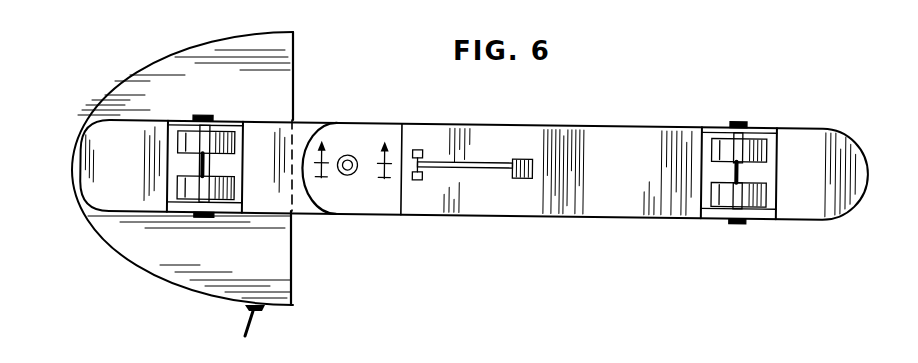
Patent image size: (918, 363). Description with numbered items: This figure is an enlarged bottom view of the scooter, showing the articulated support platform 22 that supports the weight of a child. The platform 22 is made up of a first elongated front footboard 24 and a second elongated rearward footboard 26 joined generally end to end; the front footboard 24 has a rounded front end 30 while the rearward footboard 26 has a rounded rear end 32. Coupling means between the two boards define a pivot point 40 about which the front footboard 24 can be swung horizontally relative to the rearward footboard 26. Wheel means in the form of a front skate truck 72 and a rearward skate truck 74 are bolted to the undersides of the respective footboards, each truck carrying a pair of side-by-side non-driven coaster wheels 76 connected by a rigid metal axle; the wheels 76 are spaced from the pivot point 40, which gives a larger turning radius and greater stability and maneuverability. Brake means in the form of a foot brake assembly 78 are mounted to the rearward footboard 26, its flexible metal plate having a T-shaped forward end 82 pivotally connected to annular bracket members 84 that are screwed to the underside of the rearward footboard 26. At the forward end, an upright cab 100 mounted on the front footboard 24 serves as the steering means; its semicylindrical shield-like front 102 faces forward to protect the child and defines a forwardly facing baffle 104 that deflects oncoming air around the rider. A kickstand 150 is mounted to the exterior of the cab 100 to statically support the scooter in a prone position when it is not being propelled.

The articulated support platform 22 is at (428, 214).
The front footboard 24 is at (147, 119).
The rearward footboard 26 is at (541, 124).
The rounded front end 30 is at (84, 205).
The rounded rear end 32 is at (868, 194).
The pivot point 40 is at (348, 176).
The front skate truck 72 is at (236, 146).
The rearward skate truck 74 is at (769, 153).
The coaster wheels 76 is at (769, 197).
The foot brake assembly 78 is at (513, 161).
The T-shaped forward end 82 is at (413, 151).
The bracket members 84 is at (424, 179).
The cab 100 is at (294, 80).
The shield-like front 102 is at (78, 209).
The baffle 104 is at (143, 266).
The kickstand 150 is at (254, 325).